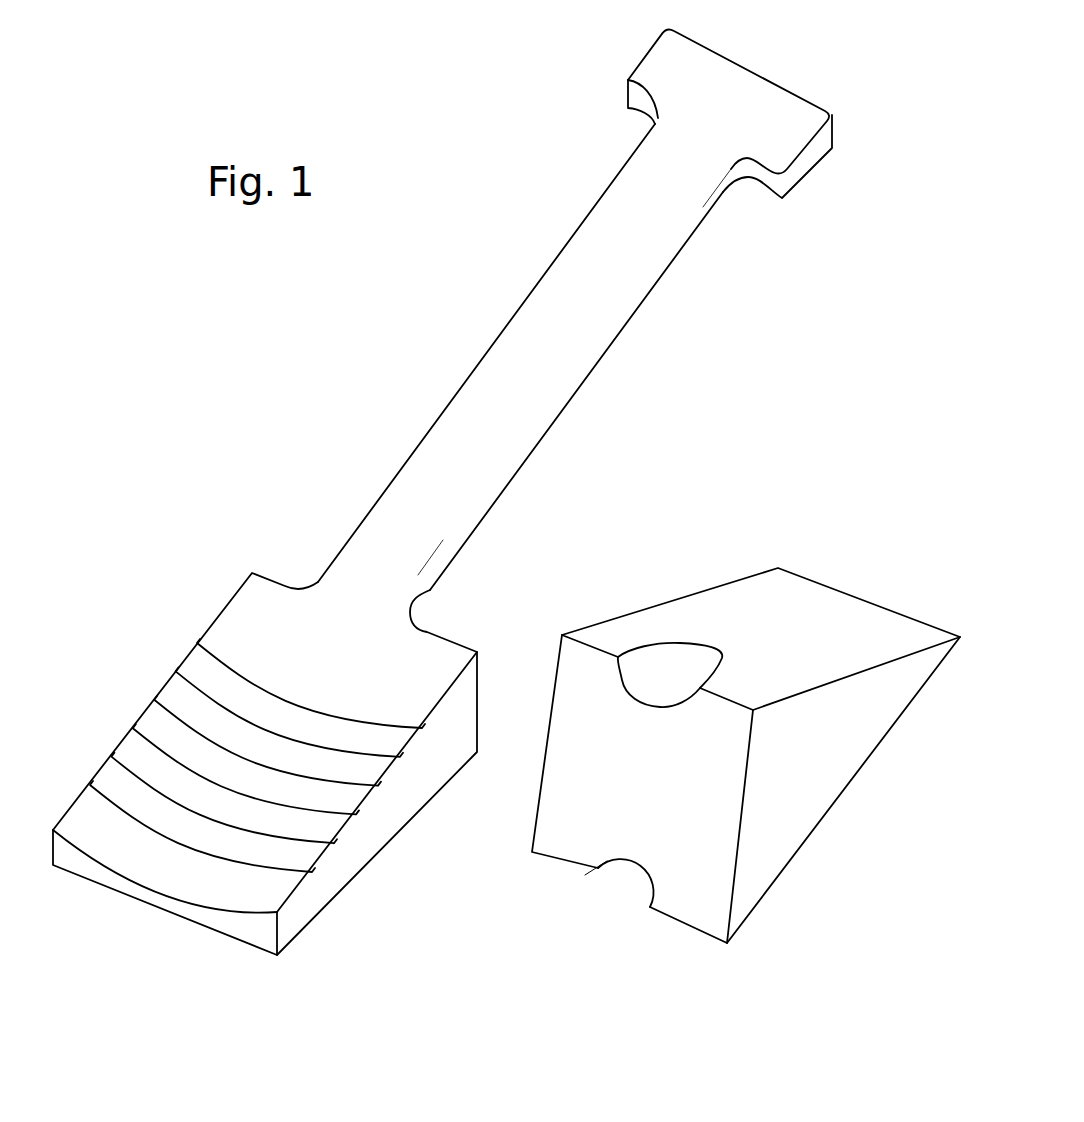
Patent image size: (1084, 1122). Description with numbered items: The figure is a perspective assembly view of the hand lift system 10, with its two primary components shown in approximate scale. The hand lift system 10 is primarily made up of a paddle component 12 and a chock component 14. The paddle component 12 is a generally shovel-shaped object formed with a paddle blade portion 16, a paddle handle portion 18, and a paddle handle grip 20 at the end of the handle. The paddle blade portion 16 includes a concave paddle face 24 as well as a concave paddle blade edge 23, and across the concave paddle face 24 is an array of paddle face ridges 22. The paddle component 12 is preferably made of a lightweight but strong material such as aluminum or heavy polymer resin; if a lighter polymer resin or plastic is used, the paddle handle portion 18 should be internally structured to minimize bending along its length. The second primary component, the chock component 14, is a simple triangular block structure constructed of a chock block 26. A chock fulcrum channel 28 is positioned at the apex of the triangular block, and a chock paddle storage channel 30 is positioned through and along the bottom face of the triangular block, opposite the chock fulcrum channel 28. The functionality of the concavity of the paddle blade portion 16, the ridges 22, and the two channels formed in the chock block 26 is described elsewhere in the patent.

The hand lift system 10 is at (52, 1004).
The paddle component 12 is at (382, 374).
The chock component 14 is at (870, 540).
The paddle blade portion 16 is at (428, 793).
The paddle handle portion 18 is at (658, 280).
The paddle handle grip 20 is at (645, 50).
The paddle face ridges 22 is at (241, 745).
The concave paddle blade edge 23 is at (147, 890).
The concave paddle face 24 is at (324, 660).
The chock block 26 is at (882, 737).
The chock fulcrum channel 28 is at (661, 669).
The chock paddle storage channel 30 is at (614, 895).